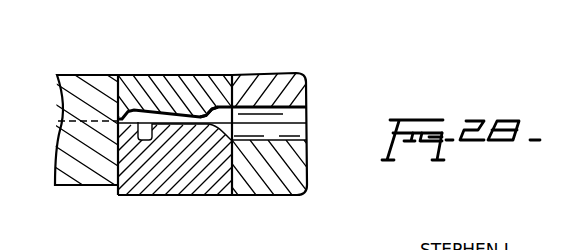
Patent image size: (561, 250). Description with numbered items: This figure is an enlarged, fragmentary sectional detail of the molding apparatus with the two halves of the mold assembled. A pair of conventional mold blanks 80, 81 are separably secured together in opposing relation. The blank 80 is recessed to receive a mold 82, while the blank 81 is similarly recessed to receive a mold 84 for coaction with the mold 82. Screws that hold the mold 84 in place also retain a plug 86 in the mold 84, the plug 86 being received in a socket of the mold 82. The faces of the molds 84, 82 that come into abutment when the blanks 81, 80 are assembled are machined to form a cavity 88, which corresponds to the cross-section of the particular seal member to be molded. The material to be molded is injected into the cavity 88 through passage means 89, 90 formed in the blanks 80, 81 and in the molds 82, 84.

The mold blank 80 is at (308, 167).
The mold blank 81 is at (311, 75).
The mold 82 is at (137, 172).
The mold 84 is at (137, 90).
The plug 86 is at (78, 168).
The cavity 88 is at (153, 118).
The passage means 89 is at (258, 113).
The passage means 90 is at (204, 116).